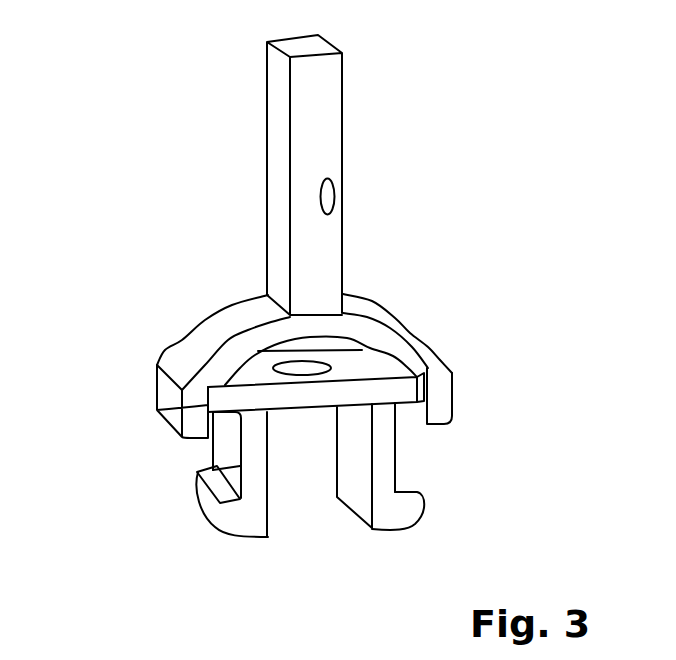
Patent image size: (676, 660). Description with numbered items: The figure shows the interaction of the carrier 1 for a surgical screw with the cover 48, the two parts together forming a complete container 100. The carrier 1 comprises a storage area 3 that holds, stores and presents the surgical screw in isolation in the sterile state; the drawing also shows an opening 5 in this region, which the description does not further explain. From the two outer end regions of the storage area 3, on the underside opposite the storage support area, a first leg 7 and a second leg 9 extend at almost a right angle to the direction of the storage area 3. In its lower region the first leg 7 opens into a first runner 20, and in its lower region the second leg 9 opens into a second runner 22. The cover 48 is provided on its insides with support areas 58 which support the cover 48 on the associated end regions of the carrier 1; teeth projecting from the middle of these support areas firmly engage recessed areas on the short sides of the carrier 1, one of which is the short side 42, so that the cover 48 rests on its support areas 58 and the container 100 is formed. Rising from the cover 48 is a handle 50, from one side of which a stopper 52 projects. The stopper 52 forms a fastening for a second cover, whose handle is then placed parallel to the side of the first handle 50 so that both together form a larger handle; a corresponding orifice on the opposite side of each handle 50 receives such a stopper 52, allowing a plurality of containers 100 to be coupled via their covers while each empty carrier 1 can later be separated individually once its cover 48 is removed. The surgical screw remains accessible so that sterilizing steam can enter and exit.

The container 100 is at (138, 67).
The cover 48 is at (219, 193).
The handle 50 is at (298, 125).
The stopper 52 is at (330, 200).
The carrier 1 is at (133, 478).
The storage area 3 is at (377, 393).
The short side 42 is at (157, 410).
The support area 58 is at (222, 385).
The opening 5 is at (302, 373).
The first runner 20 is at (260, 527).
The first leg 7 is at (235, 465).
The second leg 9 is at (385, 447).
The second runner 22 is at (408, 510).